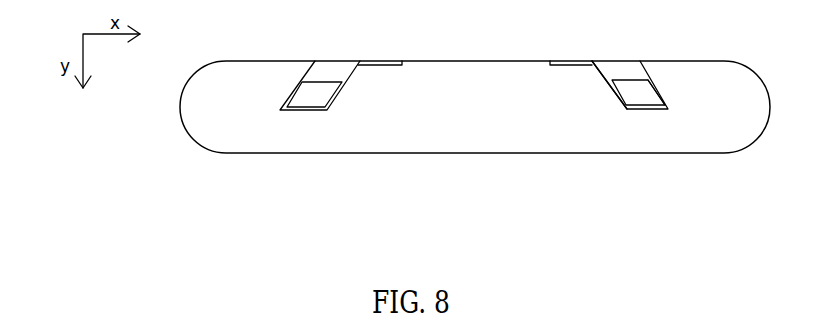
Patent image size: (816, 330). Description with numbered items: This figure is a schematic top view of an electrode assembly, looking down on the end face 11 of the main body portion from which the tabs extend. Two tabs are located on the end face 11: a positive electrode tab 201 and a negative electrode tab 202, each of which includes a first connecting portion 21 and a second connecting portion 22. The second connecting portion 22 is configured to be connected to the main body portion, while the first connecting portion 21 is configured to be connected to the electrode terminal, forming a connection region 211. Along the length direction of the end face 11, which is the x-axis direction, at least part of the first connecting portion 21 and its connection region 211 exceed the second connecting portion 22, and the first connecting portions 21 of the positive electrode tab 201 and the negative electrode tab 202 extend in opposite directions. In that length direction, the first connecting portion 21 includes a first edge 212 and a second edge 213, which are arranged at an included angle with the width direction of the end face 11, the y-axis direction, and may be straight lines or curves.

The end face 11 is at (473, 137).
The positive electrode tab 201 is at (633, 120).
The negative electrode tab 202 is at (322, 118).
The first connecting portion 21 is at (625, 73).
The connection region 211 is at (313, 100).
The first edge 212 is at (658, 92).
The second edge 213 is at (611, 82).
The second connecting portion 22 is at (572, 63).